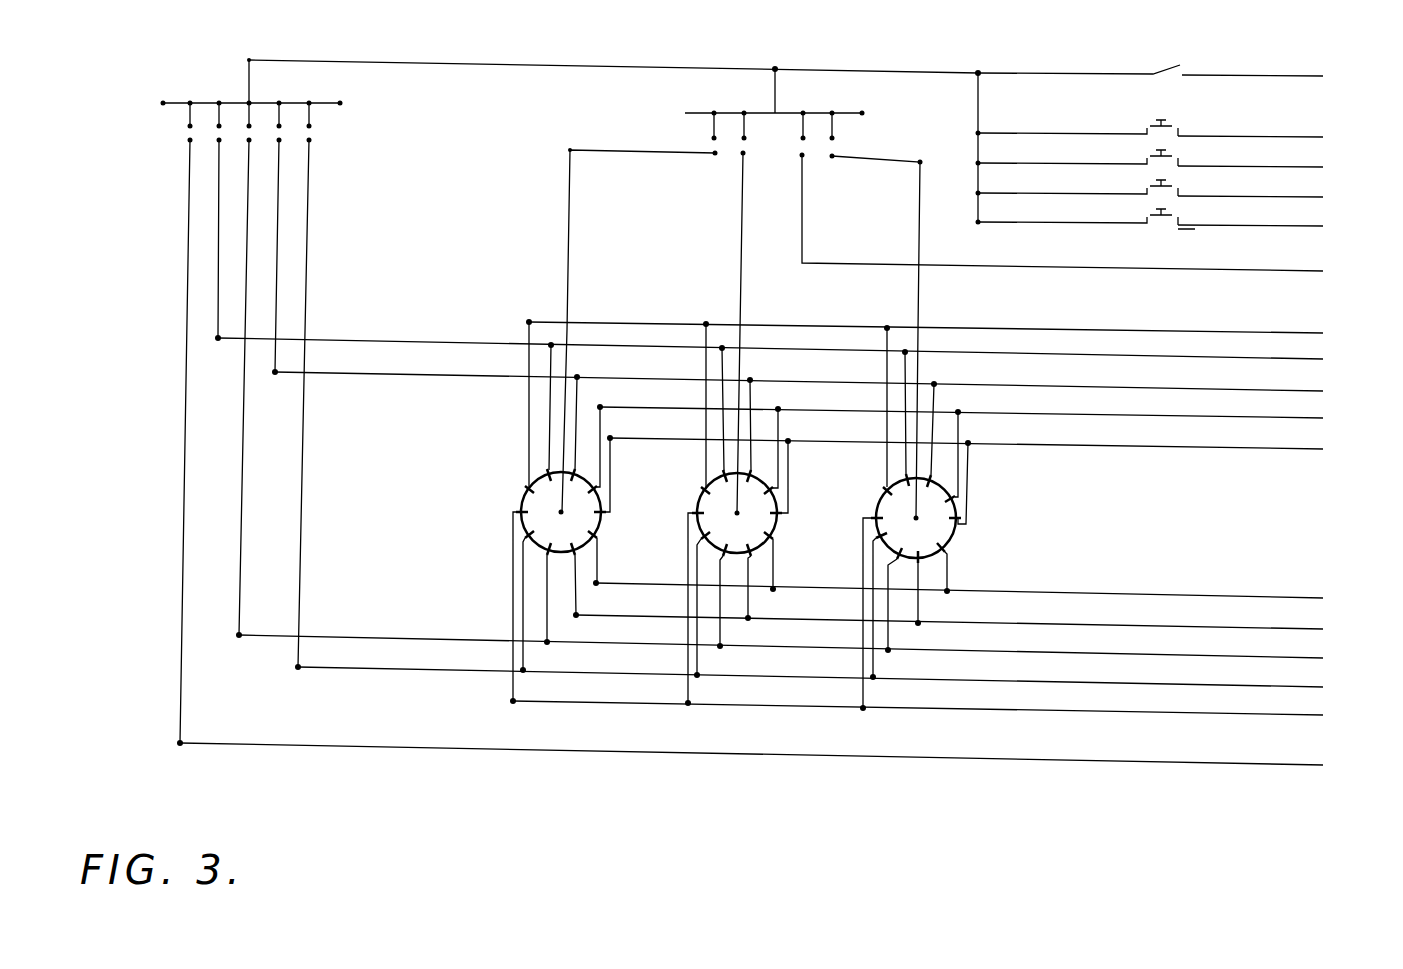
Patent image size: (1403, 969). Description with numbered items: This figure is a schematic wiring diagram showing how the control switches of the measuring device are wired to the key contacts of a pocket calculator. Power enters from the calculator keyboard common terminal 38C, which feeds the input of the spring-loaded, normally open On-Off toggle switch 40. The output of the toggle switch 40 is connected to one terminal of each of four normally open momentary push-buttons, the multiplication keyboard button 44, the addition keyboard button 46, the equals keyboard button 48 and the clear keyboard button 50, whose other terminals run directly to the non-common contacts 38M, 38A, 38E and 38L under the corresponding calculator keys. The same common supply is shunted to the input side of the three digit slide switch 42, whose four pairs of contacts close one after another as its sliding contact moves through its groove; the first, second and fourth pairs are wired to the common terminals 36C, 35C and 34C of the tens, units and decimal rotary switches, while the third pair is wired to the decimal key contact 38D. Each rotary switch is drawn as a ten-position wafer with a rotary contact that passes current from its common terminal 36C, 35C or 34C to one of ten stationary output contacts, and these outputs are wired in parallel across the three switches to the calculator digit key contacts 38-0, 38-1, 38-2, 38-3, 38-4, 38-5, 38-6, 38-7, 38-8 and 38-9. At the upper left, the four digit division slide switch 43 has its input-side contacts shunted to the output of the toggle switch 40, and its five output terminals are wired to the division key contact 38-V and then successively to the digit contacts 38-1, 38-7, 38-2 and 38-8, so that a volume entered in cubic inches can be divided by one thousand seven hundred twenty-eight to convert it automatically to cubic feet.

The four digit division slide switch 43 is at (252, 401).
The 3 digit slide switch 42 is at (749, 114).
The On-Off toggle switch 40 is at (1079, 64).
The multiplication keyboard button 44 is at (1078, 126).
The addition keyboard button 46 is at (1078, 155).
The equals keyboard button 48 is at (1078, 185).
The clear keyboard button 50 is at (1086, 215).
The common terminal of rotary switch 34 34C is at (896, 518).
The common terminal of rotary switch 35 35C is at (716, 513).
The common terminal of rotary switch 36 36C is at (535, 511).
The common terminal of the calculator keyboard 38C is at (1274, 83).
The multiplication key contact 38M is at (1274, 143).
The addition key contact 38A is at (1272, 170).
The equals key contact 38E is at (1271, 198).
The clear key contact 38L is at (1271, 228).
The decimal key contact 38D is at (1085, 221).
The numeral 0 key contact 38-0 is at (948, 333).
The numeral 1 key contact 38-1 is at (793, 353).
The numeral 2 key contact 38-2 is at (821, 387).
The numeral 3 key contact 38-3 is at (984, 418).
The numeral 4 key contact 38-4 is at (989, 449).
The numeral 5 key contact 38-5 is at (982, 595).
The numeral 6 key contact 38-6 is at (972, 626).
The numeral 7 key contact 38-7 is at (803, 652).
The numeral 8 key contact 38-8 is at (833, 682).
The numeral 9 key contact 38-9 is at (940, 714).
The division key contact 38-V is at (774, 759).